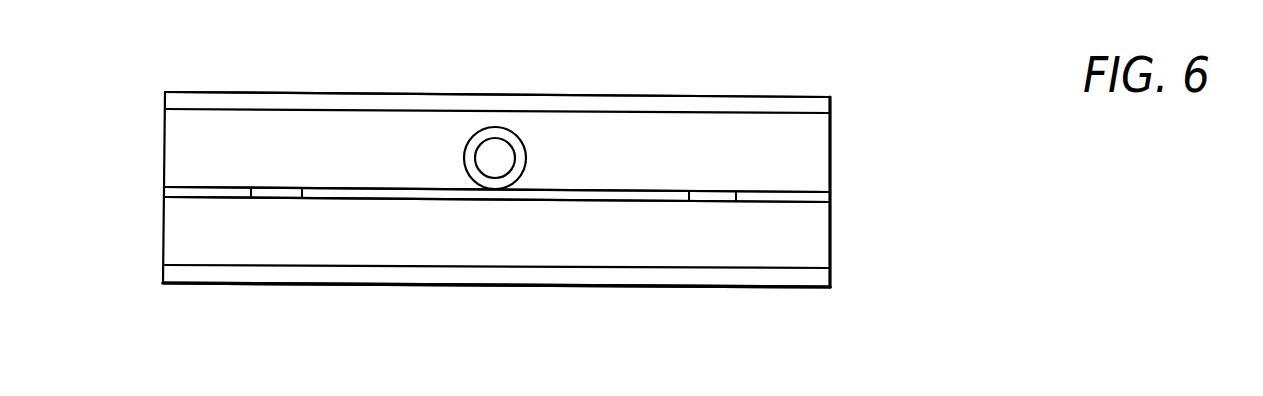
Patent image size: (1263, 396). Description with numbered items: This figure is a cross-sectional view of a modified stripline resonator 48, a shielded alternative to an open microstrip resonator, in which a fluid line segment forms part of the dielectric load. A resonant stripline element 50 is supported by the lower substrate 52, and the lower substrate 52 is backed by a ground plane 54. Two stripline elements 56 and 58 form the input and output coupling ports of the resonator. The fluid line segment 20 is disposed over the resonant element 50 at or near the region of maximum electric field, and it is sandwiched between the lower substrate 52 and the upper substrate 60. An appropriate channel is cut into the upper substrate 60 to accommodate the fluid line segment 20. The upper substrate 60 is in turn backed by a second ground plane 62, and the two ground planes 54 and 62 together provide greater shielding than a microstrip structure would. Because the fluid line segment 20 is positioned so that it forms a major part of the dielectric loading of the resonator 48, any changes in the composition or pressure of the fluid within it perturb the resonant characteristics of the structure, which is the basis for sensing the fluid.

The fluid line segment 20 is at (507, 123).
The modified stripline resonator 48 is at (553, 185).
The resonant stripline element 50 is at (408, 197).
The lower substrate 52 is at (757, 240).
The ground plane 54 is at (630, 287).
The stripline element 56 is at (163, 192).
The stripline element 58 is at (832, 193).
The upper substrate 60 is at (290, 125).
The second ground plane 62 is at (665, 93).